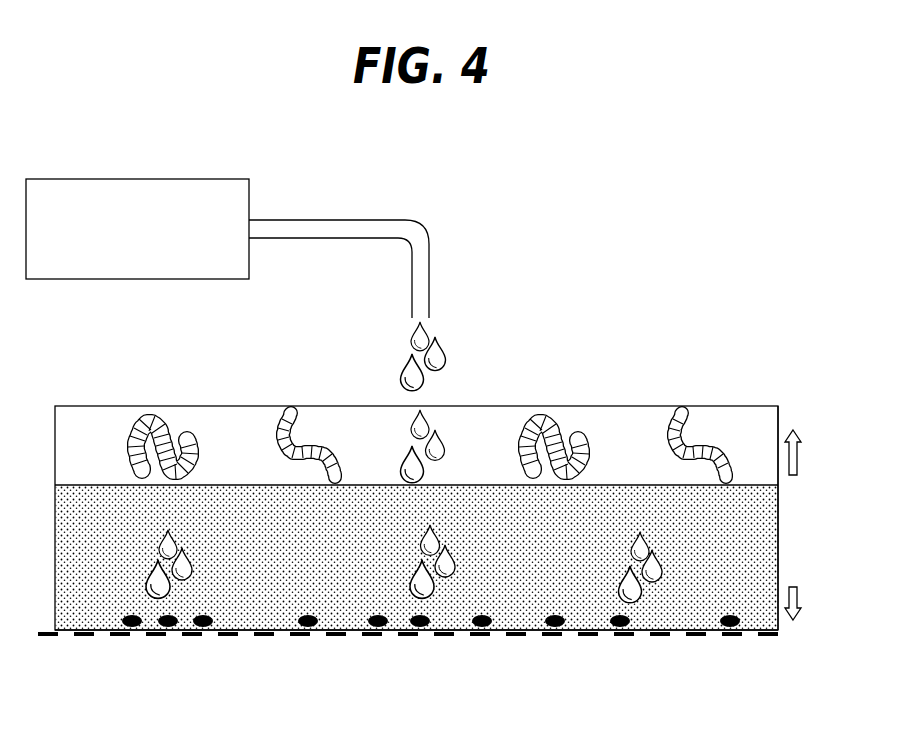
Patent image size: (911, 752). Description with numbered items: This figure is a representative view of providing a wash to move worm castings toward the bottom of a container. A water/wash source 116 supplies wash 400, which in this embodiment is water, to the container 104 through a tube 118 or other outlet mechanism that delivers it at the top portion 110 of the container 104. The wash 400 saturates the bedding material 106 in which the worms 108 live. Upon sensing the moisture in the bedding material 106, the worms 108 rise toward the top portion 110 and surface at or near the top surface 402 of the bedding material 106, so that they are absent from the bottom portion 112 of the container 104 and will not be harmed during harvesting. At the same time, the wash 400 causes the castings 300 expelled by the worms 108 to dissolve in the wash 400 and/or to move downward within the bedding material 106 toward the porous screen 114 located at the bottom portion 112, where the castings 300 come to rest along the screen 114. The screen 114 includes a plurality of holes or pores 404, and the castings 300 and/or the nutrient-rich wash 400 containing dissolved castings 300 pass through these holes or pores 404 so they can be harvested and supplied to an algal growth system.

The container 104 is at (779, 497).
The bedding material 106 is at (755, 532).
The worms 108 is at (279, 403).
The top portion 110 is at (693, 383).
The bottom portion 112 is at (797, 629).
The screen 114 is at (779, 636).
The water/wash source 116 is at (233, 178).
The tube 118 is at (365, 219).
The worm castings 300 is at (131, 640).
The wash 400 is at (396, 346).
The top surface 402 is at (373, 485).
The holes or pores 404 is at (736, 643).